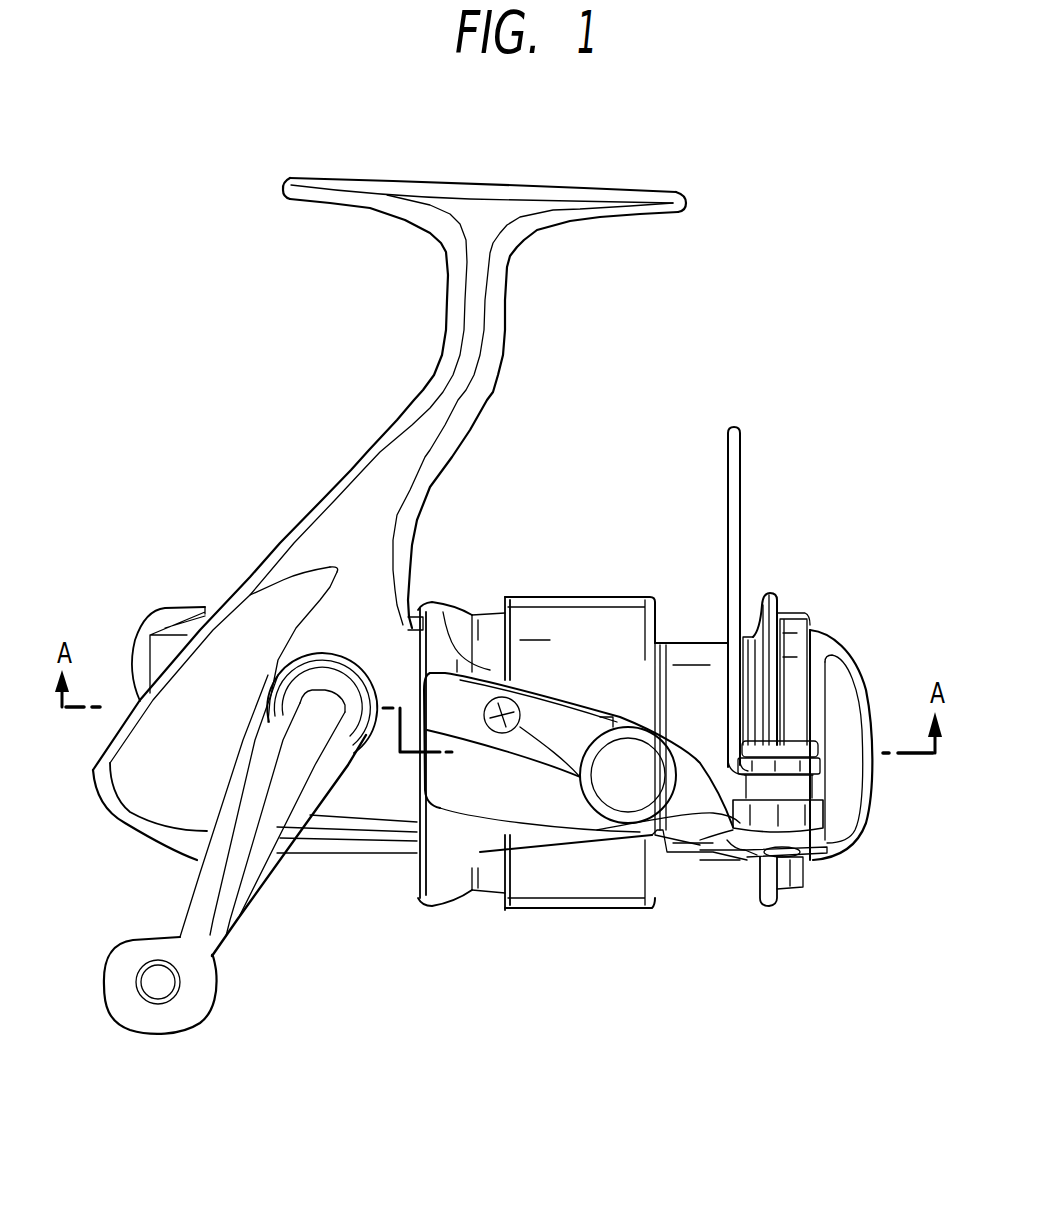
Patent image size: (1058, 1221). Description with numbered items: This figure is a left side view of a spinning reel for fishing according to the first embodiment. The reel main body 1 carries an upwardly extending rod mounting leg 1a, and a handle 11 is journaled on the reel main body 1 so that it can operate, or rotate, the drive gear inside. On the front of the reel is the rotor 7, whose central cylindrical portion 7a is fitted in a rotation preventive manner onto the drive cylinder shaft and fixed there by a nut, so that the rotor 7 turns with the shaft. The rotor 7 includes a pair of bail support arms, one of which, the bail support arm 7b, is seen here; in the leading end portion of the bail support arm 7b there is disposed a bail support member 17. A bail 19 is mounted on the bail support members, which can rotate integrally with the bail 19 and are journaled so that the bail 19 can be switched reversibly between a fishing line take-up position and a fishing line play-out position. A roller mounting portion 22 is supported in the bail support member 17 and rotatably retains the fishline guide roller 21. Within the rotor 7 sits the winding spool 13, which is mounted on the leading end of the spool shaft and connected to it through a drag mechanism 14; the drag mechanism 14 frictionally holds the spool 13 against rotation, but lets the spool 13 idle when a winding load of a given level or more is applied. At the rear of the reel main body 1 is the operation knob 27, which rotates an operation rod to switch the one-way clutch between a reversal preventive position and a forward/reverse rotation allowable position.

The reel main body 1 is at (360, 835).
The rod mounting leg 1a is at (500, 318).
The rotor 7 is at (488, 842).
The central cylindrical portion 7a is at (485, 618).
The bail support arm 7b is at (570, 823).
The handle 11 is at (235, 862).
The winding spool 13 is at (697, 650).
The drag mechanism 14 is at (848, 705).
The bail support member 17 is at (722, 833).
The bail 19 is at (741, 455).
The fishline guide roller 21 is at (813, 797).
The roller mounting portion 22 is at (783, 733).
The operation knob 27 is at (137, 612).